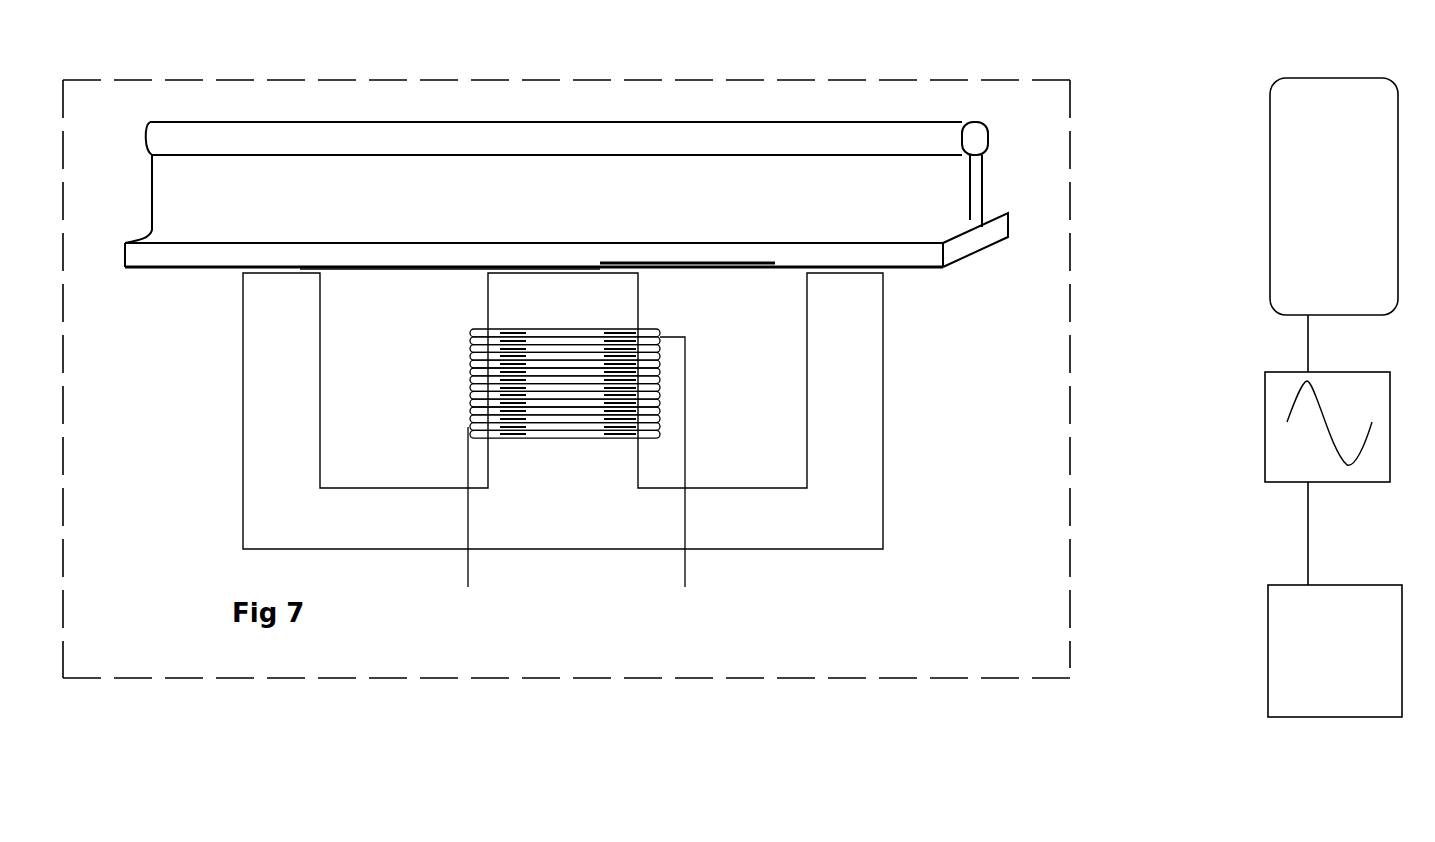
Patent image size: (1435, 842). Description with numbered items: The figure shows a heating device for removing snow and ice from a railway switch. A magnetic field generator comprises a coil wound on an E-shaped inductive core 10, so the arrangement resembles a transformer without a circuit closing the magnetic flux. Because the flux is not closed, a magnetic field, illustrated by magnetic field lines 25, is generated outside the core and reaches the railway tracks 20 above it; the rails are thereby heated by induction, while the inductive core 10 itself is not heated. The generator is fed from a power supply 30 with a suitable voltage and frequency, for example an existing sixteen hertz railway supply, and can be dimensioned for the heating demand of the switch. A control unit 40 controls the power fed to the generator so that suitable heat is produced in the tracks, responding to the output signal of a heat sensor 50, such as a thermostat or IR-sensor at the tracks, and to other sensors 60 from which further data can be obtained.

The inductive core 10 is at (867, 500).
The railway tracks 20 is at (185, 253).
The magnetic field lines 25 is at (743, 270).
The power supply 30 is at (870, 640).
The control unit 40 is at (1276, 455).
The heat sensor 50 is at (1275, 118).
The other sensors 60 is at (1285, 622).